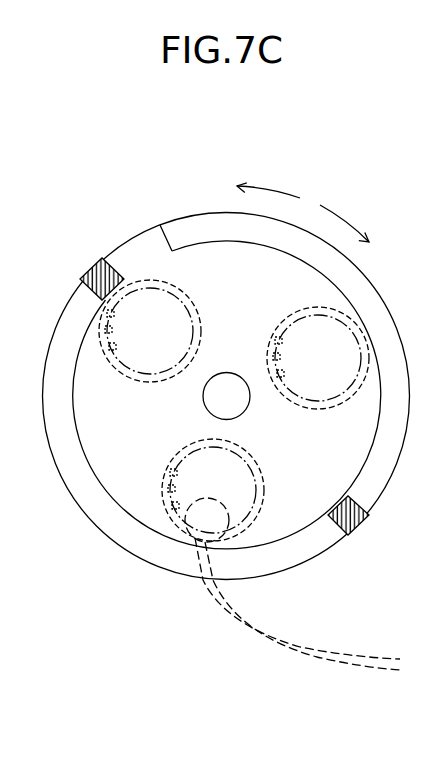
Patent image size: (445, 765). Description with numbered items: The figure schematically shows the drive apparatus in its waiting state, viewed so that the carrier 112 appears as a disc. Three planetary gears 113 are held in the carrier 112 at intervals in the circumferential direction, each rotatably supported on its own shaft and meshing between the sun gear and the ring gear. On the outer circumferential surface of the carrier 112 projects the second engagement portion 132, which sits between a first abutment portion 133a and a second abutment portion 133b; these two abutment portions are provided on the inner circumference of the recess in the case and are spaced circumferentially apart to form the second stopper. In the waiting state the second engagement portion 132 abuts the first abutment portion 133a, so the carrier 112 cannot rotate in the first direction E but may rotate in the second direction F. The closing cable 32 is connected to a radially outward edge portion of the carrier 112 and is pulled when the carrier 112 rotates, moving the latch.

The carrier 112 is at (99, 138).
The planetary gear 113 is at (100, 307).
The second engagement portion 132 is at (152, 232).
The first abutment portion 133a is at (100, 258).
The second abutment portion 133b is at (355, 530).
The closing cable 32 is at (239, 625).